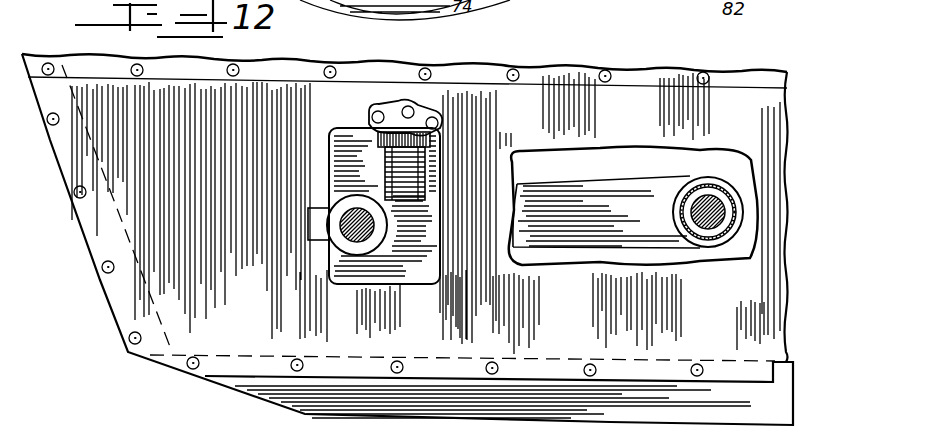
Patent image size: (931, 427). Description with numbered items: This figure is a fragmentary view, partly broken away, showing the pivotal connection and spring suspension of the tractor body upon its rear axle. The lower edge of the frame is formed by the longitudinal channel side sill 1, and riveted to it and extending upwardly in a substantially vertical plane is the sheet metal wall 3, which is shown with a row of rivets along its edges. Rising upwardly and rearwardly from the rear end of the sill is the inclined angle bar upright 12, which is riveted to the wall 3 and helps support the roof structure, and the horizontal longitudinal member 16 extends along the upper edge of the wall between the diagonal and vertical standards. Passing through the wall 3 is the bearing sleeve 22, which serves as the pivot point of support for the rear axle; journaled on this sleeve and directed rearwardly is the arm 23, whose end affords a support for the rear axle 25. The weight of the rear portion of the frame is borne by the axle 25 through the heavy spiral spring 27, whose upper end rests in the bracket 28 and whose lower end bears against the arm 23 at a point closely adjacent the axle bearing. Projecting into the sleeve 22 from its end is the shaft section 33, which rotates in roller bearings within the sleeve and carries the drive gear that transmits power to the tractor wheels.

The longitudinal channel side sill 1 is at (310, 399).
The sheet metal wall 3 is at (426, 213).
The inclined angle bar upright 12 is at (110, 246).
The horizontal longitudinal member 16 is at (300, 62).
The bearing sleeve 22 is at (713, 193).
The arm 23 is at (606, 212).
The rear axle 25 is at (352, 216).
The spiral spring 27 is at (433, 173).
The bracket 28 is at (405, 118).
The shaft section 33 is at (712, 228).